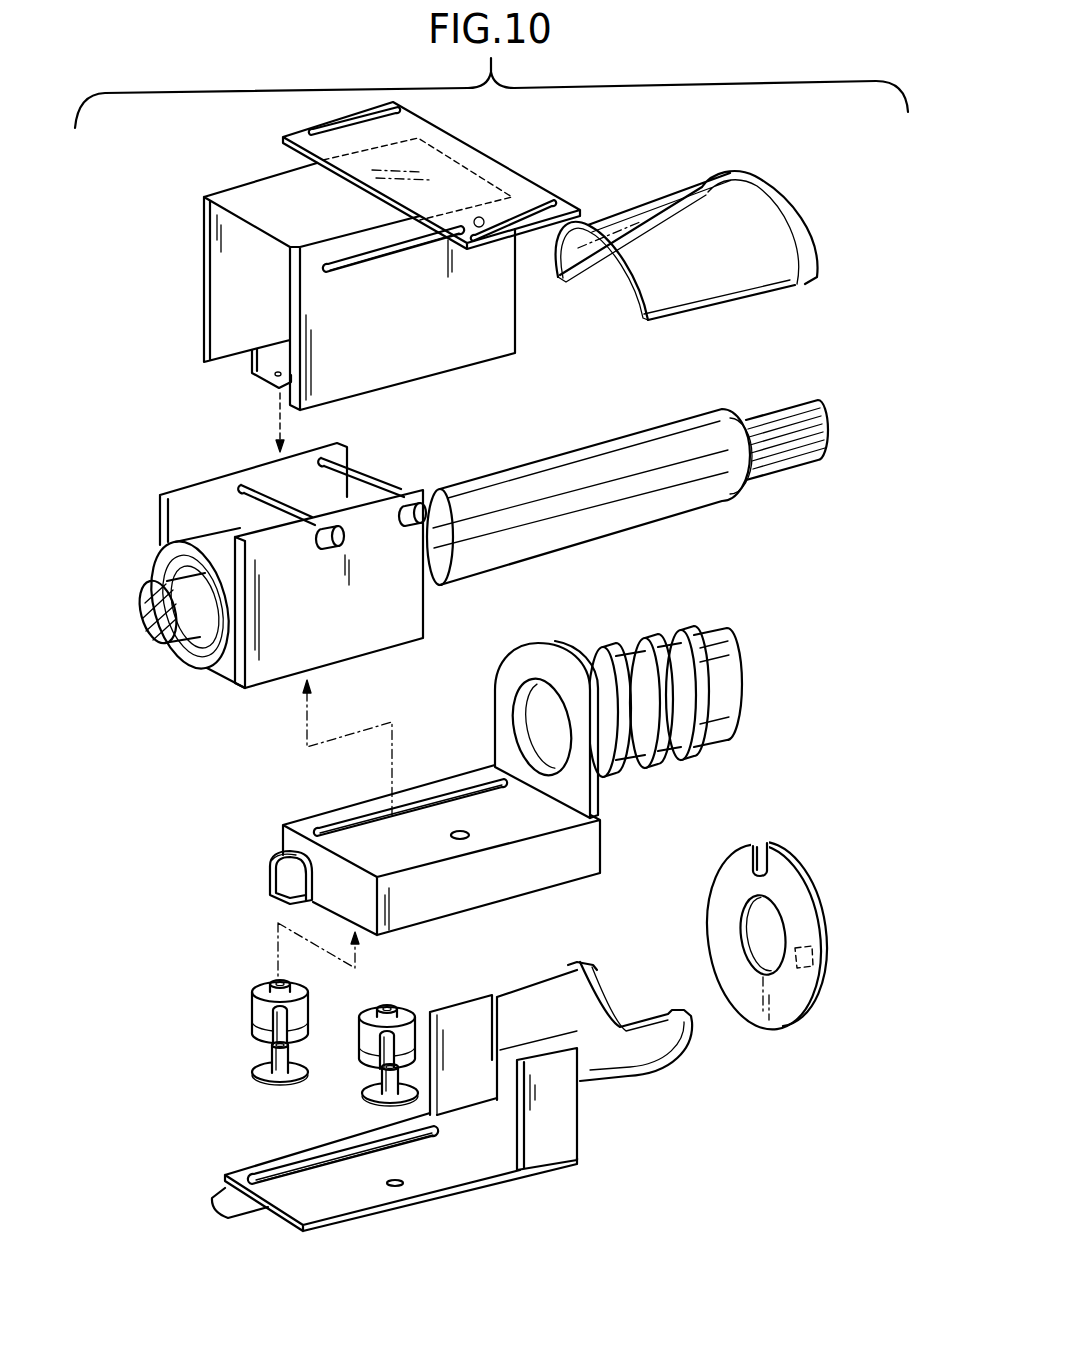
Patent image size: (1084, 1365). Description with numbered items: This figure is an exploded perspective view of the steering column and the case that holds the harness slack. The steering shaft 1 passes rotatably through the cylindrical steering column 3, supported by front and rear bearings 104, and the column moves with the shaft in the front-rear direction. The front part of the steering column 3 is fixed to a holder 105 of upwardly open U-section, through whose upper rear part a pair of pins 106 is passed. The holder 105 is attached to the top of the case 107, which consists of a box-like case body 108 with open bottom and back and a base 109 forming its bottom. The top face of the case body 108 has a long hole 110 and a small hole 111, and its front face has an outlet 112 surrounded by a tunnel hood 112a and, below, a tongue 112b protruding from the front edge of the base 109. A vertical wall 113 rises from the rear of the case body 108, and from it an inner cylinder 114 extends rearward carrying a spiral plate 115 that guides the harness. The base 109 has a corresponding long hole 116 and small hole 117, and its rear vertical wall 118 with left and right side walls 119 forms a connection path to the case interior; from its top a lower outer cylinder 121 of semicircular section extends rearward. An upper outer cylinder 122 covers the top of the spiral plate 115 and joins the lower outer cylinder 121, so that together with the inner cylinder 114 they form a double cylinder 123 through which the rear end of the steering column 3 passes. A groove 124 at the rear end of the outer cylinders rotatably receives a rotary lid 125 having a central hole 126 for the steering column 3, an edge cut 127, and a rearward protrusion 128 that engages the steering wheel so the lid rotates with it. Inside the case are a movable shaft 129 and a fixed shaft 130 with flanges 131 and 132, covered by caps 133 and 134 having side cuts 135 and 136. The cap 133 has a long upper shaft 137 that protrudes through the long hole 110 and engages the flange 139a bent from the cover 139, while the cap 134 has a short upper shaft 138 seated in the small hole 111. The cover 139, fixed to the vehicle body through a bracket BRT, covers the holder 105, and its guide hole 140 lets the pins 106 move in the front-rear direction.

The steering shaft 1 is at (784, 476).
The steering column 3 is at (600, 462).
The bearing 104 is at (152, 556).
The holder 105 is at (213, 498).
The pin 106 is at (342, 538).
The case 107 is at (210, 963).
The case body 108 is at (283, 846).
The base 109 is at (346, 1198).
The long hole 110 is at (366, 810).
The small hole 111 is at (462, 831).
The outlet 112 is at (268, 884).
The tunnel hood 112a is at (268, 857).
The tongue 112b is at (212, 1213).
The vertical wall 113 is at (497, 668).
The inner cylinder 114 is at (727, 670).
The spiral plate 115 is at (655, 630).
The long hole 116 is at (292, 1180).
The small hole 117 is at (398, 1186).
The vertical wall 118 is at (503, 1058).
The side wall 119 is at (552, 1147).
The lower outer cylinder 121 is at (600, 1083).
The upper outer cylinder 122 is at (684, 207).
The double cylinder 123 is at (703, 1100).
The groove 124 is at (580, 958).
The rotary lid 125 is at (793, 910).
The hole 126 is at (743, 940).
The cut 127 is at (767, 868).
The protrusion 128 is at (830, 952).
The movable shaft 129 is at (270, 1050).
The fixed shaft 130 is at (374, 1077).
The flange 131 is at (262, 1080).
The flange 132 is at (367, 1100).
The cap 133 is at (252, 997).
The cap 134 is at (360, 1020).
The cut 135 is at (273, 1023).
The cut 136 is at (380, 1043).
The upper shaft 137 is at (279, 983).
The upper shaft 138 is at (387, 1010).
The cover 139 is at (283, 189).
The flange 139a is at (253, 377).
The guide hole 140 is at (360, 250).
The bracket BRT is at (500, 163).